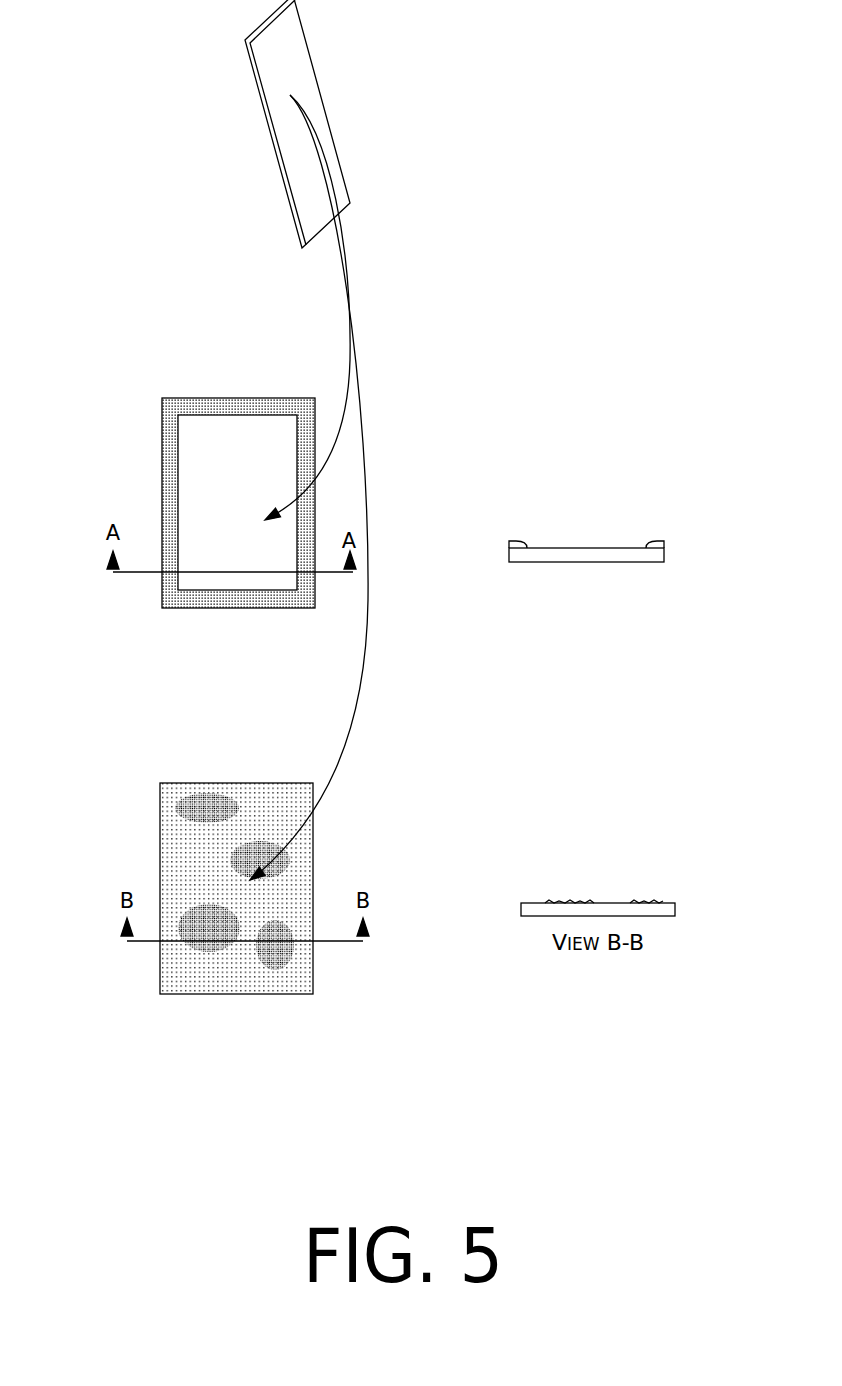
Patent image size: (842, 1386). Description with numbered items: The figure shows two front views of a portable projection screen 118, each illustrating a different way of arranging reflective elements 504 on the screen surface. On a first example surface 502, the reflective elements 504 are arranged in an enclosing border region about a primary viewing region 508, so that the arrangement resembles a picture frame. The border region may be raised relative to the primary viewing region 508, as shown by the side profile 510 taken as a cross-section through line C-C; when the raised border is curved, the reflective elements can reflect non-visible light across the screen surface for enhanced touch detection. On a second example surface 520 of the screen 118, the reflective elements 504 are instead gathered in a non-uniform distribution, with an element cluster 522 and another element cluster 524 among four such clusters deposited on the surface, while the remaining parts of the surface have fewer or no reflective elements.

The portable projection screen 118 is at (316, 73).
The first example surface 502 is at (199, 478).
The reflective elements 504 is at (168, 480).
The primary viewing region 508 is at (227, 452).
The side profile 510 is at (586, 521).
The second example surface 520 is at (209, 896).
The element cluster 522 is at (207, 802).
The element cluster 524 is at (260, 860).